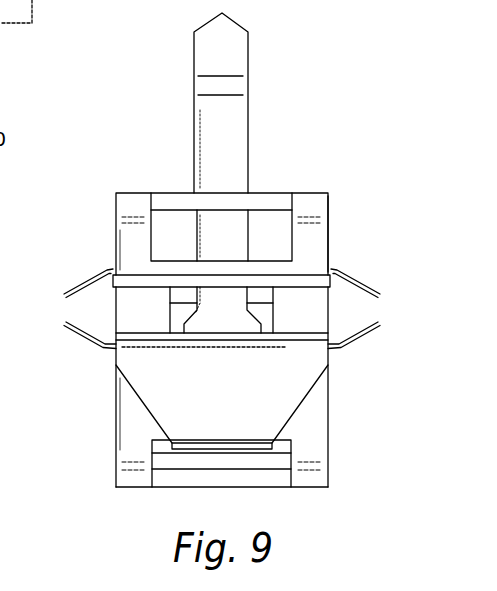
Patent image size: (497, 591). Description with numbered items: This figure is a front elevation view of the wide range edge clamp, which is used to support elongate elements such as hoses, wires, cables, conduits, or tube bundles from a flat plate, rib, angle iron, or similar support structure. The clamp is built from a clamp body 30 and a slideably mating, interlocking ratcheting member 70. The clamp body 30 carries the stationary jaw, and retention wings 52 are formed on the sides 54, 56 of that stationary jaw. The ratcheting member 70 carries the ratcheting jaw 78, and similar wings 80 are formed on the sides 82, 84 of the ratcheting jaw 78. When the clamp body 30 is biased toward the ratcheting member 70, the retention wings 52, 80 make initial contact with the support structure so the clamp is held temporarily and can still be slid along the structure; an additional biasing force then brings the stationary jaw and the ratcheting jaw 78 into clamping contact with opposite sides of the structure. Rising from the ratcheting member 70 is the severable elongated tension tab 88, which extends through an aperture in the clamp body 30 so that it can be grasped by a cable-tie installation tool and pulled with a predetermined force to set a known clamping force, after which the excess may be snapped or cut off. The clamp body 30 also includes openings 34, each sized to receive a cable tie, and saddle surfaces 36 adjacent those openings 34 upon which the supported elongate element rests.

The clamp body 30 is at (186, 268).
The openings 34 is at (173, 462).
The saddle surfaces 36 is at (276, 487).
The retention wings 52 is at (72, 290).
The side of the stationary jaw 54 is at (115, 252).
The side of the stationary jaw 56 is at (330, 232).
The ratcheting member 70 is at (330, 421).
The ratcheting jaw 78 is at (213, 352).
The wings 80 is at (70, 327).
The side of the ratcheting jaw 82 is at (114, 358).
The side of the ratcheting jaw 84 is at (330, 360).
The tension tab 88 is at (194, 102).